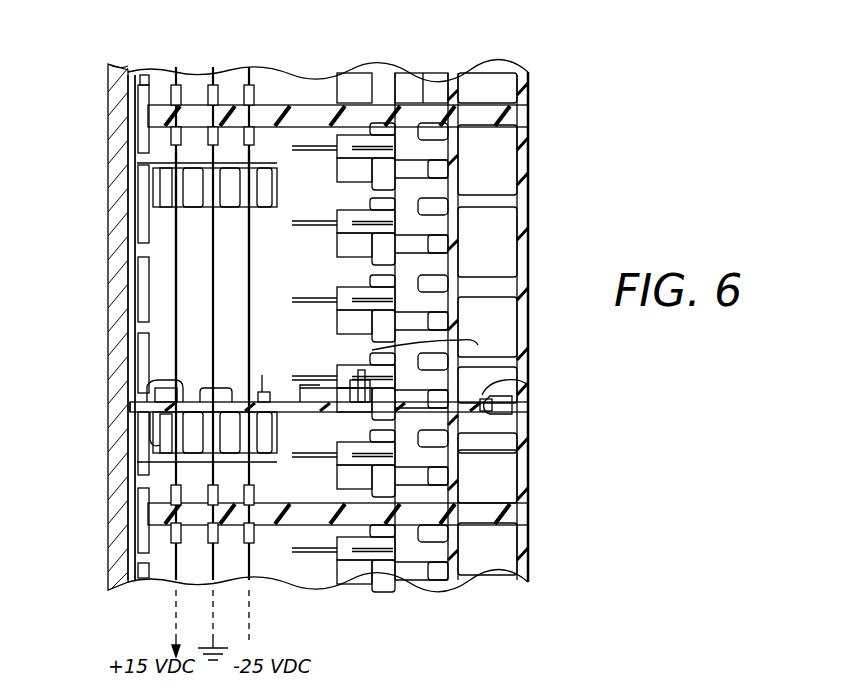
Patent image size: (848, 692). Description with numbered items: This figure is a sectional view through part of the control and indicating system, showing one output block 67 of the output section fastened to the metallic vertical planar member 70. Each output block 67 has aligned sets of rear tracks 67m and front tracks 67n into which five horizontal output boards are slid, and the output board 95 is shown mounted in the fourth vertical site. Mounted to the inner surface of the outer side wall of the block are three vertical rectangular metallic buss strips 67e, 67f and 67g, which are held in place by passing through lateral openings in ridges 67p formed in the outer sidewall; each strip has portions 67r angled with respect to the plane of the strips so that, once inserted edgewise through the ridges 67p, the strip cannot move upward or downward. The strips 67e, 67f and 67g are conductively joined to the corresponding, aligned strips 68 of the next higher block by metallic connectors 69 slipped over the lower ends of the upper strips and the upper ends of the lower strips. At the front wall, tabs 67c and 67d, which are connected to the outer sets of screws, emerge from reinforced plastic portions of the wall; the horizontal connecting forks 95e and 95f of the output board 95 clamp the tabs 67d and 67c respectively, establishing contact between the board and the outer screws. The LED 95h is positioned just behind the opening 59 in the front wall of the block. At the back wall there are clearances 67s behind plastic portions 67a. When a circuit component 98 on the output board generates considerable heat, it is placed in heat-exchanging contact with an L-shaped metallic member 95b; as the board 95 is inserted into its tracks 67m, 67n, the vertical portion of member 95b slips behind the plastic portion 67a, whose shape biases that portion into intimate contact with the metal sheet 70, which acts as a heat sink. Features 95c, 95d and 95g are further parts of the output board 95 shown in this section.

The metallic vertical planar member 70 is at (116, 76).
The aligned strips of the next higher block 68 is at (213, 65).
The metallic connectors 69 is at (222, 40).
The rear tracks 67m is at (137, 150).
The angled portions 67r is at (172, 175).
The ridges 67p is at (277, 170).
The vertical rectangular metallic strip 67e is at (175, 272).
The vertical rectangular metallic strip 67f is at (214, 268).
The vertical rectangular metallic strip 67g is at (250, 240).
The clearances 67s is at (128, 306).
The plastic portions 67a is at (140, 348).
The output block 67 is at (372, 289).
The tab 67c is at (440, 378).
The tab 67d is at (322, 380).
The front tracks 67n is at (458, 160).
The output board 95 is at (505, 424).
The L-shaped metallic member 95b is at (200, 396).
The board connector 95c is at (165, 392).
The board edge 95d is at (262, 390).
The horizontal connecting fork 95e is at (279, 389).
The horizontal connecting fork 95f is at (355, 380).
The board latch 95g is at (520, 378).
The LED 95h is at (512, 400).
The opening 59 is at (530, 406).
The circuit component 98 is at (160, 430).